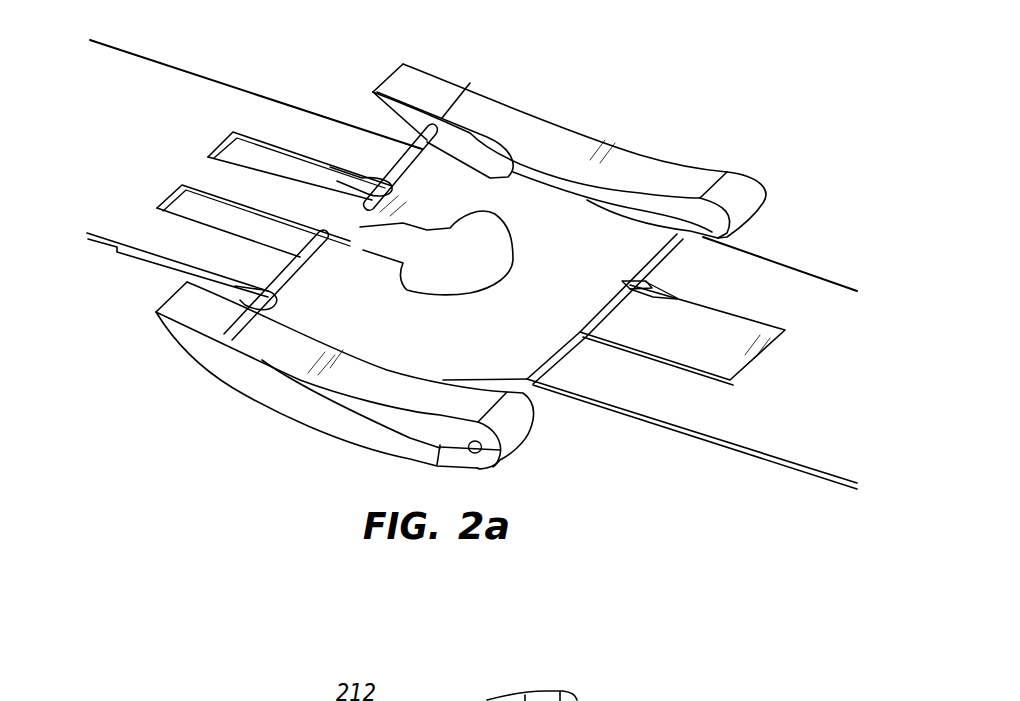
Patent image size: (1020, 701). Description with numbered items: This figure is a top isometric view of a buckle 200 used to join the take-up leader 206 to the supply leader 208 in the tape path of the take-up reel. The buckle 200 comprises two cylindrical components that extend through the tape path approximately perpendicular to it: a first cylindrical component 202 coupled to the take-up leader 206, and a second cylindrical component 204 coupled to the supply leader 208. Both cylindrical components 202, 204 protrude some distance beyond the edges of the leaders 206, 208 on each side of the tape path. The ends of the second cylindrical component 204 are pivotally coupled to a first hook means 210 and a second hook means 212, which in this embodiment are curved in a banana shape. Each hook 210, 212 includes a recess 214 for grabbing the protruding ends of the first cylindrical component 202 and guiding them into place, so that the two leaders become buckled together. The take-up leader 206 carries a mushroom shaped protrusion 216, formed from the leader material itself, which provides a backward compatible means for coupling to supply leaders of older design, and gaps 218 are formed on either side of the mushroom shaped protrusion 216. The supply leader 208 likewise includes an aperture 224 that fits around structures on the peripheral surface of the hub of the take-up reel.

The buckle 200 is at (225, 405).
The first cylindrical component 202 is at (372, 197).
The second cylindrical component 204 is at (632, 282).
The take-up leader 206 is at (120, 248).
The supply leader 208 is at (657, 420).
The first hook means 210 is at (343, 442).
The second hook means 212 is at (657, 153).
The recesses 214 is at (600, 197).
The mushroom shaped protrusion 216 is at (493, 250).
The gaps 218 is at (178, 202).
The aperture 224 is at (757, 314).